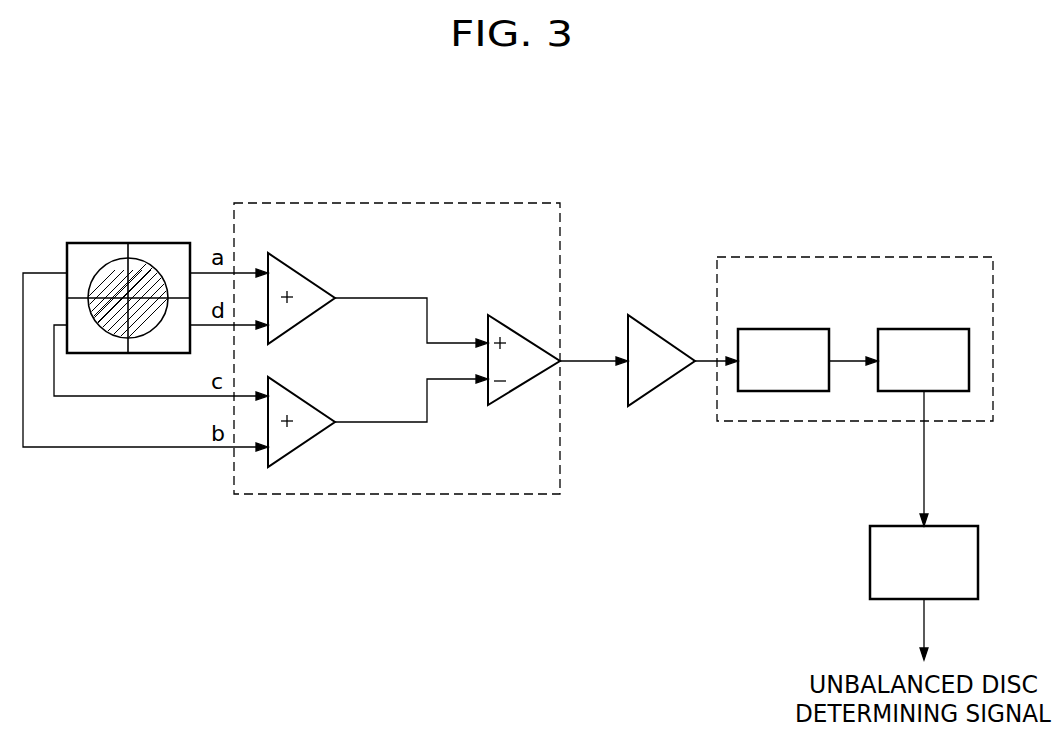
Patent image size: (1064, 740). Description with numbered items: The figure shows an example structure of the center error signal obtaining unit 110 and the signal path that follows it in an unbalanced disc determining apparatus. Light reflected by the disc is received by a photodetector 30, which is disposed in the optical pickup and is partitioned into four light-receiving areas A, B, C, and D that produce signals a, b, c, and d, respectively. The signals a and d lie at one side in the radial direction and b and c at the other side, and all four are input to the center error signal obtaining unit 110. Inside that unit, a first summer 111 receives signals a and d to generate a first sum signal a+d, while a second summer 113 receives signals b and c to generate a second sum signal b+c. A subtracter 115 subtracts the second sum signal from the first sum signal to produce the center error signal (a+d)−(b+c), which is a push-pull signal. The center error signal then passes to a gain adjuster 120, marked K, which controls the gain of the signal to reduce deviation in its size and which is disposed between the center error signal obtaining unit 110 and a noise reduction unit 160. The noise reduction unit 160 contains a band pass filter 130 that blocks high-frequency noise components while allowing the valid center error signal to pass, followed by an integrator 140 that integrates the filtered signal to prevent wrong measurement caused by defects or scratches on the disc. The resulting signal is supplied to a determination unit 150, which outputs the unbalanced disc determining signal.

The photodetector 30 is at (107, 243).
The center error signal obtaining unit 110 is at (398, 202).
The first summer 111 is at (306, 278).
The second summer 113 is at (306, 402).
The subtracter 115 is at (528, 340).
The gain adjuster 120 is at (663, 339).
The band pass filter 130 is at (784, 328).
The integrator 140 is at (923, 328).
The determination unit 150 is at (870, 562).
The noise reduction unit 160 is at (854, 256).